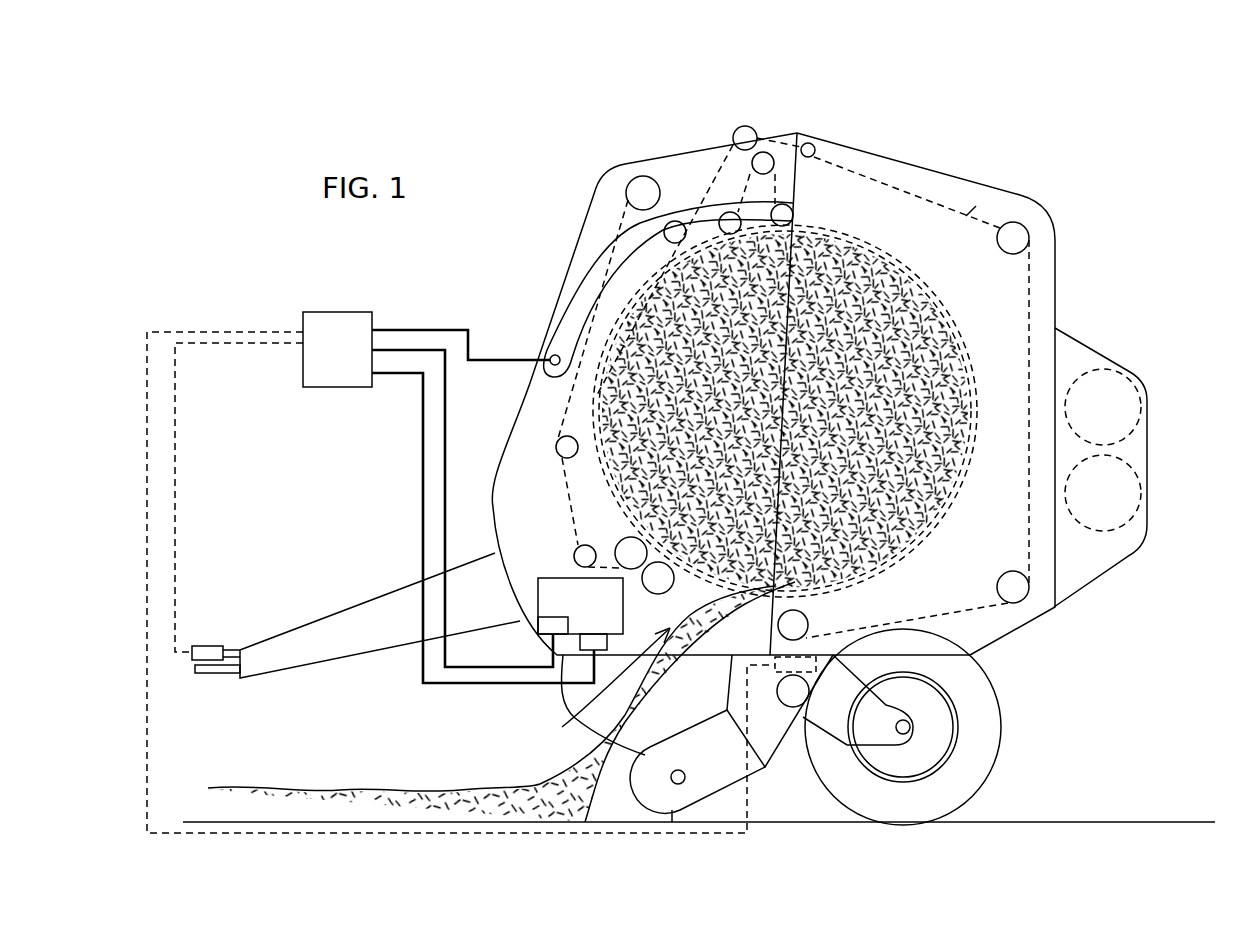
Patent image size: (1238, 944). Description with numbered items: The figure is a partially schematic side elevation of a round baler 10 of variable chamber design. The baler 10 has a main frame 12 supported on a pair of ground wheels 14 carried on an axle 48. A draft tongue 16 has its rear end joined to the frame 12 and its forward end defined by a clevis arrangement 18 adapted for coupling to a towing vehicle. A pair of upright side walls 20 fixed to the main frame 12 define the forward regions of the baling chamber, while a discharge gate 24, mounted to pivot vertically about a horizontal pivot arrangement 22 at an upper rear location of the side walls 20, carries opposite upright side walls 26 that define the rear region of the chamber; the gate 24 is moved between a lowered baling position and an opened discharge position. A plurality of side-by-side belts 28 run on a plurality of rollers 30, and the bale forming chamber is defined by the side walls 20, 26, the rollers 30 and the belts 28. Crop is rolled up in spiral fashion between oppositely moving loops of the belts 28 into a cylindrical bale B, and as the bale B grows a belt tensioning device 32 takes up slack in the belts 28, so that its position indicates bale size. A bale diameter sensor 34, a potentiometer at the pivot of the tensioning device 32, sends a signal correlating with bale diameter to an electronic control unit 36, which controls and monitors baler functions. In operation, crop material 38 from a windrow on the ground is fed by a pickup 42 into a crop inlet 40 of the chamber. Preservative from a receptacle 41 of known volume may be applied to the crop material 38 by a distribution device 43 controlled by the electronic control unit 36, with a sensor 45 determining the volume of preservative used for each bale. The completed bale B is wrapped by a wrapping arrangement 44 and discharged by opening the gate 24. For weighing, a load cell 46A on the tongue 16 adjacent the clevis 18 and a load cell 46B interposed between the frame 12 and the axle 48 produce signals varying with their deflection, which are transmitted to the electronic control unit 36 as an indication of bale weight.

The round baler 10 is at (966, 134).
The main frame 12 is at (873, 738).
The ground wheels 14 is at (988, 743).
The draft tongue 16 is at (370, 608).
The clevis arrangement 18 is at (202, 673).
The upright side walls 20 is at (680, 170).
The horizontal pivot arrangement 22 is at (813, 146).
The discharge gate 24 is at (1055, 270).
The gate side walls 26 is at (972, 210).
The belts 28 is at (1030, 293).
The rollers 30 is at (1025, 228).
The belt tensioning device 32 is at (593, 270).
The bale diameter sensor 34 is at (550, 356).
The electronic control unit 36 is at (350, 317).
The crop material 38 is at (385, 788).
The crop inlet 40 is at (562, 727).
The preservative receptacle 41 is at (553, 577).
The pickup 42 is at (685, 793).
The distribution device 43 is at (597, 642).
The wrapping arrangement 44 is at (1142, 405).
The sensor 45 is at (538, 623).
The load cell 46A is at (207, 646).
The load cell 46B is at (816, 672).
The axle 48 is at (787, 708).
The bale B is at (960, 497).